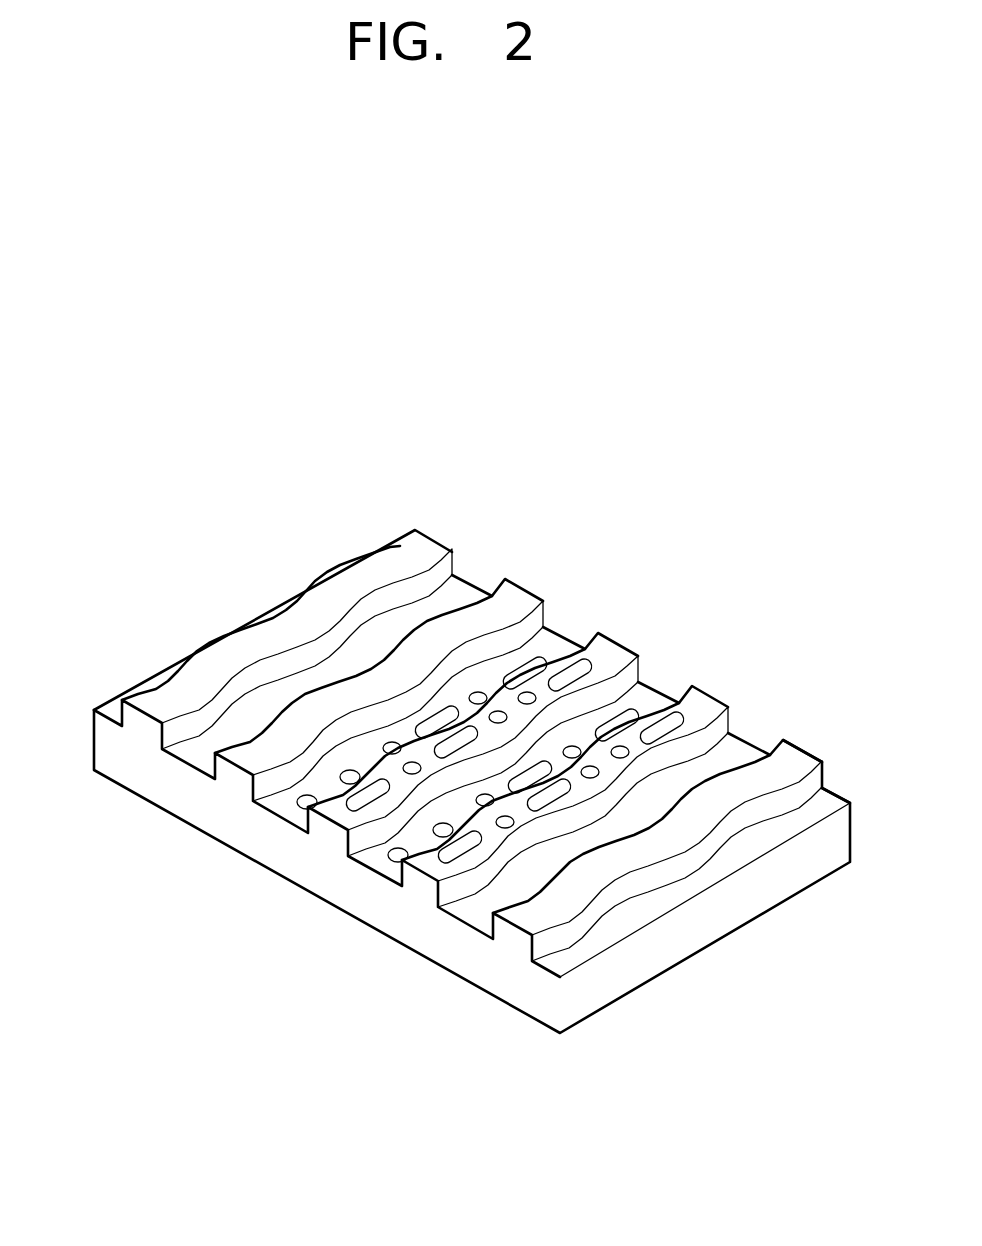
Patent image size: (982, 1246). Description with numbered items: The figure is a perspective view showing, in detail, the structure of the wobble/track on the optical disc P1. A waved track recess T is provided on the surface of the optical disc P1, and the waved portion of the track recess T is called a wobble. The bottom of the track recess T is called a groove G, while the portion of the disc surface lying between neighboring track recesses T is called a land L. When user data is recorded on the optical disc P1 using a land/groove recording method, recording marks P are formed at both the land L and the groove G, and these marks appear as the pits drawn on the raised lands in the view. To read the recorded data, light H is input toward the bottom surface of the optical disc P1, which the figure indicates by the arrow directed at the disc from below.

The land L is at (552, 606).
The groove G is at (553, 645).
The recording marks P is at (588, 660).
The track recess T is at (308, 805).
The light H is at (356, 946).
The optical disc P1 is at (680, 942).